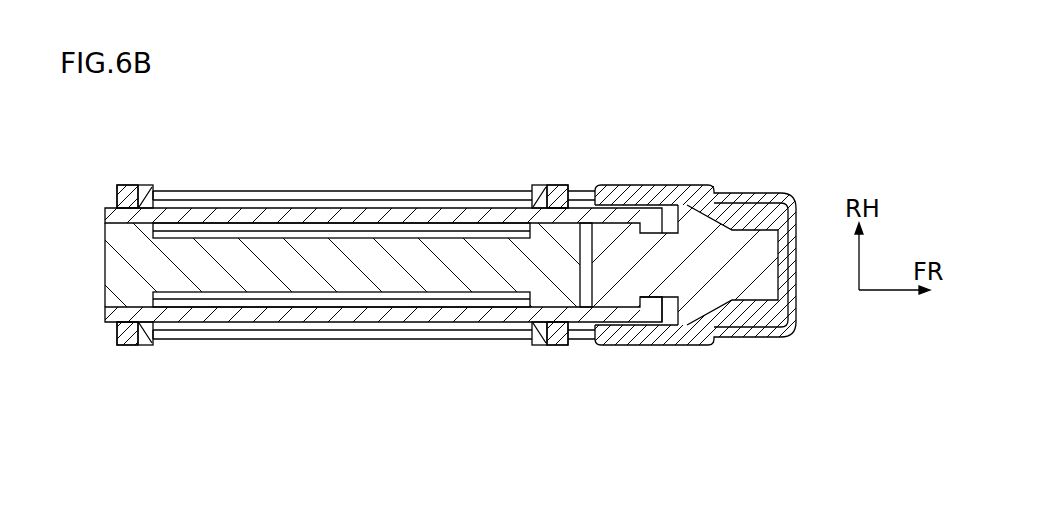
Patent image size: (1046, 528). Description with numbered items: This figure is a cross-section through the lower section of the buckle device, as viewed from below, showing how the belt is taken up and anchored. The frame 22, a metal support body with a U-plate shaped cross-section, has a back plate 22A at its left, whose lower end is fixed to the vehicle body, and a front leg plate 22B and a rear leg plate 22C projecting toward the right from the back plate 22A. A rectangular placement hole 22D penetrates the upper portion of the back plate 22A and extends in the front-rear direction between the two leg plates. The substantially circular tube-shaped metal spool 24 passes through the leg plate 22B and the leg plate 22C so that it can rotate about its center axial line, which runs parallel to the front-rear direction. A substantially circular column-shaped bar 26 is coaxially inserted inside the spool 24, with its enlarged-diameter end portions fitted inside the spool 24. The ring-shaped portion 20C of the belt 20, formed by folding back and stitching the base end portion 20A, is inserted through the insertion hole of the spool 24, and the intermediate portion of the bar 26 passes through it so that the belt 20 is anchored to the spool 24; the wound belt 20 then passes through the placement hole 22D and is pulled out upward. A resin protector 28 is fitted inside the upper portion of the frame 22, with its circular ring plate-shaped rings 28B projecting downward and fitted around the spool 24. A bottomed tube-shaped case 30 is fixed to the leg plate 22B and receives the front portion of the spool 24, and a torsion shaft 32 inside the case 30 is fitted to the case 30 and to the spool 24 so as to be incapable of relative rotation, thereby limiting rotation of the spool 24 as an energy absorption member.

The belt 20 is at (374, 261).
The base end portion 20A is at (360, 339).
The ring-shaped portion 20C is at (470, 191).
The frame 22 is at (316, 274).
The back plate 22A is at (148, 345).
The leg plate 22B is at (555, 185).
The leg plate 22C is at (125, 185).
The rectangular placement hole 22D is at (129, 375).
The spool 24 is at (245, 207).
The bar 26 is at (413, 238).
The protector 28 is at (145, 185).
The rings 28B is at (146, 345).
The case 30 is at (650, 185).
The torsion shaft 32 is at (695, 322).